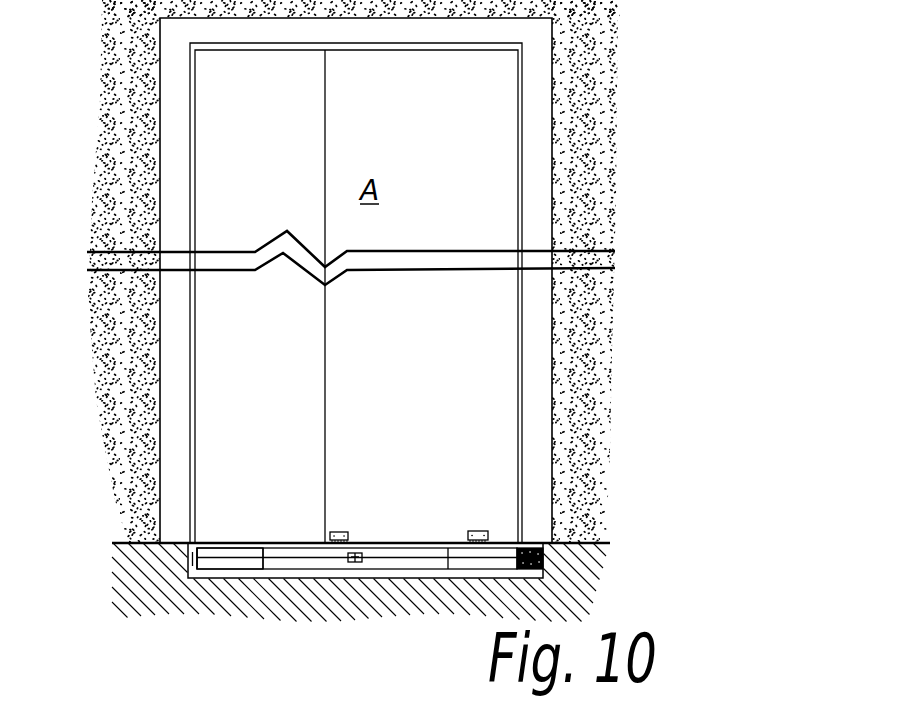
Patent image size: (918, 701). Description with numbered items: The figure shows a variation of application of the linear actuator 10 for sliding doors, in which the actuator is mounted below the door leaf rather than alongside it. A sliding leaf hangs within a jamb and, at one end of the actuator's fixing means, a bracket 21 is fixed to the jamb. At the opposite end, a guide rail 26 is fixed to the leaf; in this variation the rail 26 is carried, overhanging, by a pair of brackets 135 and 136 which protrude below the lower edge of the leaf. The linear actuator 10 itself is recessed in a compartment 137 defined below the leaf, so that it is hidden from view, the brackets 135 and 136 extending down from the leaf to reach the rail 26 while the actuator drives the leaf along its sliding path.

The linear actuator 10 is at (273, 575).
The bracket 21 is at (176, 560).
The guide rail 26 is at (545, 558).
The bracket 135 is at (346, 531).
The bracket 136 is at (478, 531).
The compartment 137 is at (386, 573).